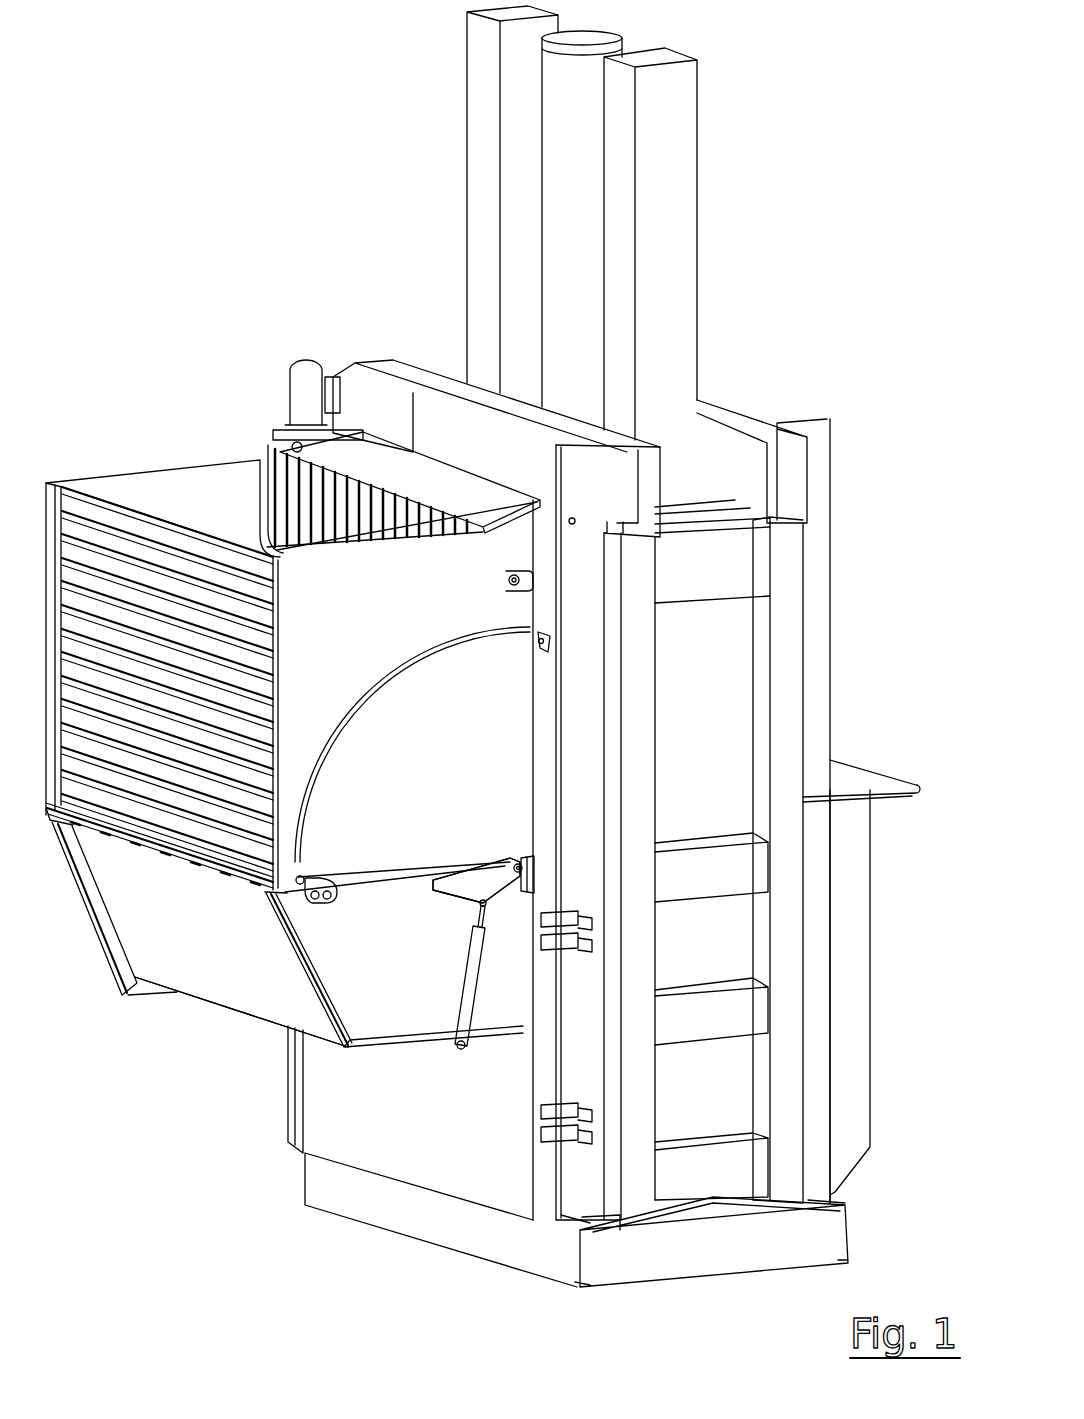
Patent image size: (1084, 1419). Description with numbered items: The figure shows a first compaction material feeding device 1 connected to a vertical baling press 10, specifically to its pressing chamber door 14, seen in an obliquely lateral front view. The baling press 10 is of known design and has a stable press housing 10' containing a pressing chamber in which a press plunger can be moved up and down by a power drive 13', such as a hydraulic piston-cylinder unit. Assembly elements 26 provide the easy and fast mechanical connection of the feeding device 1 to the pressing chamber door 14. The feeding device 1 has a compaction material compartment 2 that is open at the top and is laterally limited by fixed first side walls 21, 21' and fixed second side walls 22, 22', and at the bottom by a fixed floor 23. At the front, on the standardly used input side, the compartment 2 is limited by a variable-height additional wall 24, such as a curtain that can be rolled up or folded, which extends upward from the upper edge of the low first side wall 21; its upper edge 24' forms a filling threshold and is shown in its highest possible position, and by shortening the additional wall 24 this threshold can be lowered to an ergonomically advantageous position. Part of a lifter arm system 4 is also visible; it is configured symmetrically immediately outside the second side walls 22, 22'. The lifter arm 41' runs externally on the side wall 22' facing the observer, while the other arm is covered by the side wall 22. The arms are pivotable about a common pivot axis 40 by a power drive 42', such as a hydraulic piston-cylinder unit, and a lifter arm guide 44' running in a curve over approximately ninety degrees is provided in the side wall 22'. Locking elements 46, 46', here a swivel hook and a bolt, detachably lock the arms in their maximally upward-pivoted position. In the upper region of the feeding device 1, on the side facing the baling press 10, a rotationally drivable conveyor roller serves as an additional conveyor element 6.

The compaction material feeding device 1 is at (128, 1032).
The compaction material compartment 2 is at (200, 497).
The lifter arm system 4 is at (435, 868).
The additional conveyor element 6 is at (293, 550).
The vertical baling press 10 is at (626, 767).
The press housing 10' is at (838, 996).
The power drive 13' is at (543, 223).
The pressing chamber door 14 is at (423, 1083).
The first side wall 21 is at (112, 908).
The first side wall 21' is at (394, 1016).
The second side wall 22 is at (162, 652).
The second side wall 22' is at (498, 860).
The floor 23 is at (250, 1017).
The additional wall 24 is at (167, 709).
The upper edge 24' is at (366, 470).
The assembly elements 26 is at (505, 580).
The pivot axis 40 is at (518, 890).
The lifter arm 41' is at (451, 914).
The power drive 42' is at (434, 977).
The lifter arm guide 44' is at (412, 744).
The locking element 46 is at (627, 634).
The locking element 46' is at (333, 851).